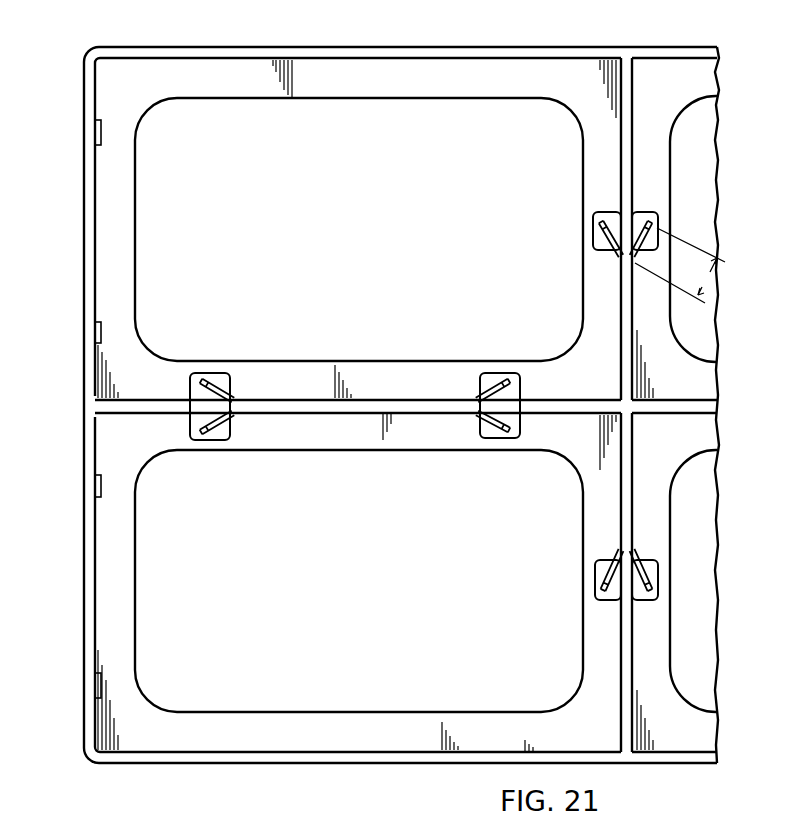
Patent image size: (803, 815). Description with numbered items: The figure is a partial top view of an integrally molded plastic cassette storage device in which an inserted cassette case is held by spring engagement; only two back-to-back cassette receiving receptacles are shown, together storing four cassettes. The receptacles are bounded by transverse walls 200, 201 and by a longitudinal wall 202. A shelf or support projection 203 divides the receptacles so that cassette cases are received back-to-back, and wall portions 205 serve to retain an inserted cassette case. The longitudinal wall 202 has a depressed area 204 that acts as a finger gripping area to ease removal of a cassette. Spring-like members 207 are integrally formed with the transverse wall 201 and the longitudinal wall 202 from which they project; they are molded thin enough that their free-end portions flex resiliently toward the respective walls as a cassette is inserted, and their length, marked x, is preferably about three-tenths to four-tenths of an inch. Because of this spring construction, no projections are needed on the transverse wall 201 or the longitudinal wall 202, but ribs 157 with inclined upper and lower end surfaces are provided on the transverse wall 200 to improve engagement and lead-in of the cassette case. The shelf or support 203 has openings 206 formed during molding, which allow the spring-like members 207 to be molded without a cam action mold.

The ribs 157 is at (95, 132).
The transverse wall 200 is at (84, 628).
The transverse wall 201 is at (618, 142).
The longitudinal wall 202 is at (348, 415).
The shelf or support projection 203 is at (670, 141).
The depressed area 204 is at (362, 403).
The wall portions 205 is at (100, 47).
The openings 206 is at (195, 375).
The spring-like members 207 is at (204, 381).